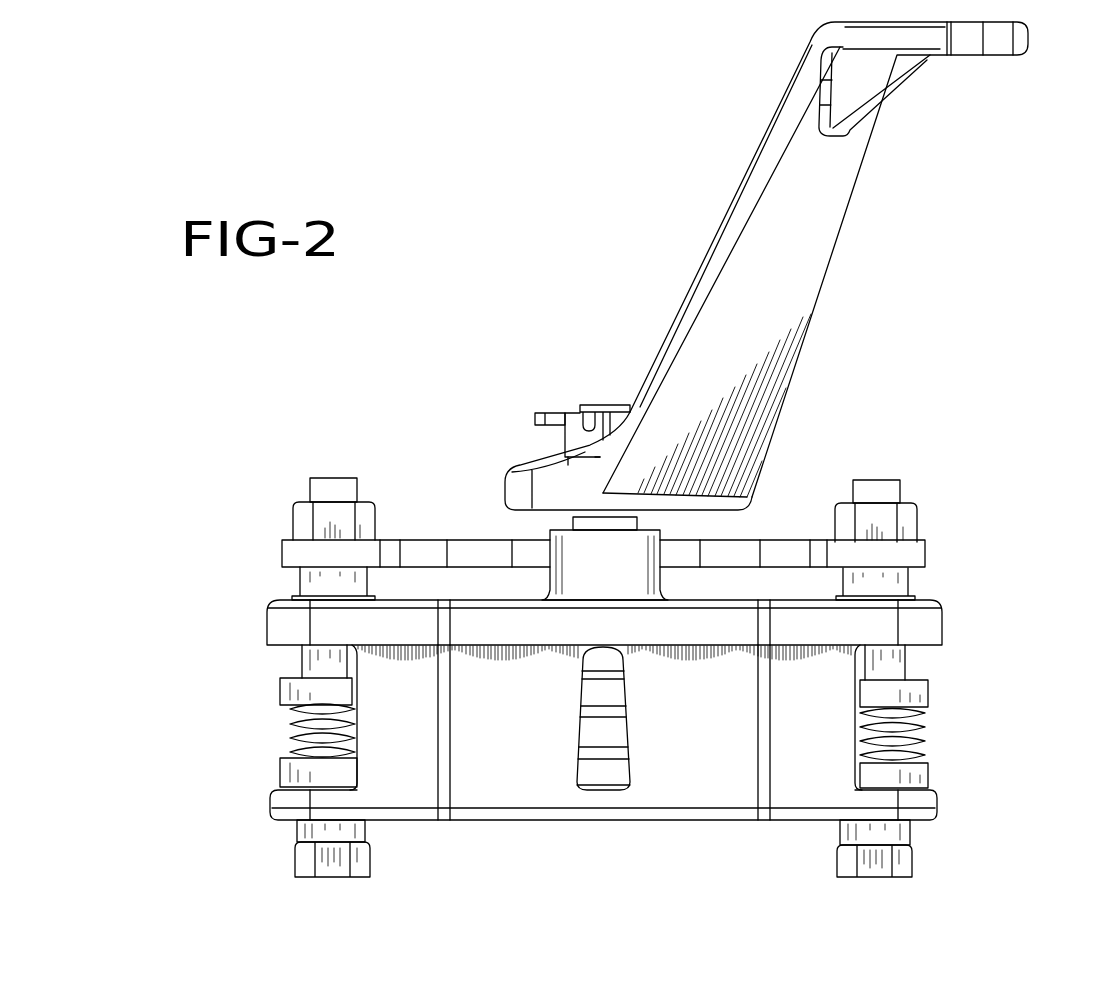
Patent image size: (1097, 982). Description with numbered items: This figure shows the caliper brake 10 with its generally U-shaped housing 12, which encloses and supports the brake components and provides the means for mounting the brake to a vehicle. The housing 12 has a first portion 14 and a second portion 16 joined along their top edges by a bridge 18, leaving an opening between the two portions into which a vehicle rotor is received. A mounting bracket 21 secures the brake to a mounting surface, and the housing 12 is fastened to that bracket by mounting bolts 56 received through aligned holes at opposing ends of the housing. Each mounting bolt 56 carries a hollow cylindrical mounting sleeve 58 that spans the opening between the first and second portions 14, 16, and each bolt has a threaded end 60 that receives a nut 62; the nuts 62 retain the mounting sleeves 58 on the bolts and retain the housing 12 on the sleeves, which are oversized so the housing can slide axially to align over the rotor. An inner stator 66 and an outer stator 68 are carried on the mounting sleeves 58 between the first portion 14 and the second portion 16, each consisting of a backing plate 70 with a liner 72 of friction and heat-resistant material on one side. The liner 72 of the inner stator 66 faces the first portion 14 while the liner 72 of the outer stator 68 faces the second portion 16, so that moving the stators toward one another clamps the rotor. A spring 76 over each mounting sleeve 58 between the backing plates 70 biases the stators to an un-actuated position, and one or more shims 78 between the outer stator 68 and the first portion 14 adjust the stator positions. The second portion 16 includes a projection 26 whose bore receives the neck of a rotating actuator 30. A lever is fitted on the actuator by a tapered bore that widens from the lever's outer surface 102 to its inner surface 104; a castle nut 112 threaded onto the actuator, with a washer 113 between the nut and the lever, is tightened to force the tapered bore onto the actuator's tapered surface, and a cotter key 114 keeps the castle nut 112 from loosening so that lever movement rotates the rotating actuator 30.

The caliper brake 10 is at (508, 238).
The housing 12 is at (943, 600).
The first portion 14 is at (547, 759).
The second portion 16 is at (815, 598).
The bridge 18 is at (535, 750).
The mounting bracket 21 is at (414, 553).
The projection 26 is at (625, 550).
The rotating actuator 30 is at (587, 522).
The mounting bolt 56 is at (305, 860).
The mounting sleeve 58 is at (298, 830).
The threaded end 60 is at (330, 490).
The nut 62 is at (298, 522).
The inner stator 66 is at (928, 690).
The outer stator 68 is at (928, 770).
The backing plate 70 is at (272, 686).
The liner 72 is at (605, 706).
The spring 76 is at (290, 728).
The shim 78 is at (280, 780).
The outer surface 102 is at (523, 462).
The inner surface 104 is at (693, 510).
The castle nut 112 is at (570, 410).
The washer 113 is at (563, 455).
The cotter key 114 is at (548, 413).